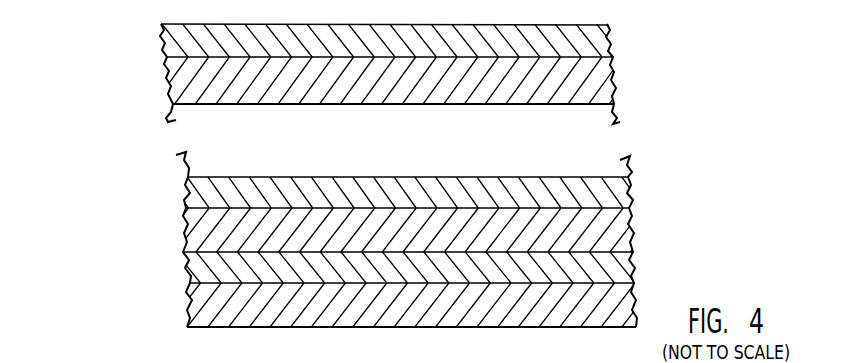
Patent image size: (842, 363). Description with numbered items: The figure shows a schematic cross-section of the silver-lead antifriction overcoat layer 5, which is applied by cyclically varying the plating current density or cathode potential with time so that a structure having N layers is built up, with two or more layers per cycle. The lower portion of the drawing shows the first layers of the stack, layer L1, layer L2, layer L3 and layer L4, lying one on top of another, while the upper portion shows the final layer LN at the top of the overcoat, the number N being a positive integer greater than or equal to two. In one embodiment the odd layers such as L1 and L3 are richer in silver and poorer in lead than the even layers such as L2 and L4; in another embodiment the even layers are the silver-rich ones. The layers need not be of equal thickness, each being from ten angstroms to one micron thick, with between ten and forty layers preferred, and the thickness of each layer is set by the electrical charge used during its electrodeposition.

The overcoat layer 5 is at (370, 173).
The layer N LN is at (612, 46).
The layer 4 L4 is at (631, 189).
The layer 3 L3 is at (630, 224).
The layer 2 L2 is at (633, 259).
The layer 1 L1 is at (635, 299).